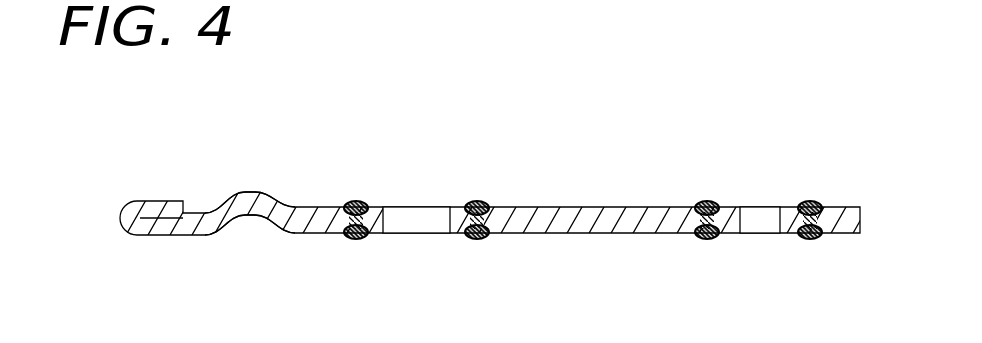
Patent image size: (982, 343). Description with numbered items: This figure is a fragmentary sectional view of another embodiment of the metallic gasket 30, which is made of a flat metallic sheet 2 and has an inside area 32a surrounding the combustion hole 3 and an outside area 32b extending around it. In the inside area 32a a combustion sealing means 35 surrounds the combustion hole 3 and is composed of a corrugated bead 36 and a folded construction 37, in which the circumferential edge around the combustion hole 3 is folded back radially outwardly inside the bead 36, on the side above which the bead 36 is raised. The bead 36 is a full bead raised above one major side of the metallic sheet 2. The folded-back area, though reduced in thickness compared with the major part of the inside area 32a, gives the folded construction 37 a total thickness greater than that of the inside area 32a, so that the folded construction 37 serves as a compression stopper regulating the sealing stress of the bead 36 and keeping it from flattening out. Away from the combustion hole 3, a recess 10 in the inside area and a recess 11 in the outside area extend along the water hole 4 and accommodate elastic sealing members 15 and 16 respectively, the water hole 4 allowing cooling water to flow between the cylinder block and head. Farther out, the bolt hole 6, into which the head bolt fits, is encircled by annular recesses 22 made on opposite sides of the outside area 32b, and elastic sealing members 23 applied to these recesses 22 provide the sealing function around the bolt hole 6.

The metallic sheet 2 is at (606, 204).
The combustion hole 3 is at (120, 216).
The water hole 4 is at (409, 215).
The bolt hole 6 is at (757, 215).
The recess 10 is at (350, 207).
The recess 11 is at (472, 205).
The elastic sealing member 15 is at (355, 201).
The elastic sealing member 16 is at (477, 201).
The annular recess 22 is at (705, 203).
The elastic sealing member 23 is at (810, 203).
The metallic gasket 30 is at (522, 204).
The inside area 32a is at (317, 228).
The outside area 32b is at (585, 225).
The combustion sealing means 35 is at (271, 189).
The corrugated bead 36 is at (248, 205).
The folded construction 37 is at (163, 197).